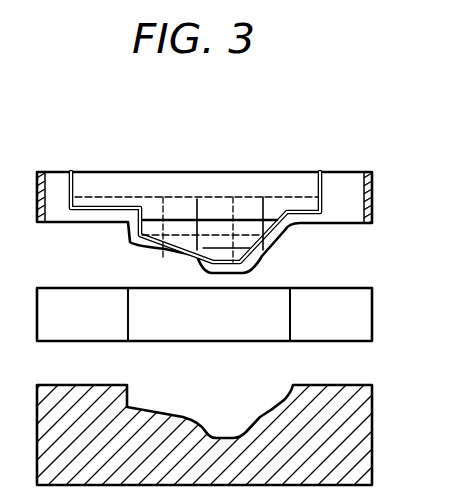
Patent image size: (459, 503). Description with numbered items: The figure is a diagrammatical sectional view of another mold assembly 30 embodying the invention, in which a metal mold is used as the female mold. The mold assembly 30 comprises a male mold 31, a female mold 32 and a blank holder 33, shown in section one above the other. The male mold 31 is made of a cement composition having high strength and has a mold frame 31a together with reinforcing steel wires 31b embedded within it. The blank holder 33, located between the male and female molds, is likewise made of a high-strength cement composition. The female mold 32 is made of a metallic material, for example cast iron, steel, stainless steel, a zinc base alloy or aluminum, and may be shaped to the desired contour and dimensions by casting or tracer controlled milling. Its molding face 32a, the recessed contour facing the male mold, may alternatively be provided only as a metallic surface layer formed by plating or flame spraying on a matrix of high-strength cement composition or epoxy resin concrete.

The mold assembly 30 is at (105, 123).
The male mold 31 is at (178, 182).
The mold frame 31a is at (373, 198).
The reinforcing steel wires 31b is at (265, 210).
The female mold 32 is at (348, 425).
The molding face 32a is at (167, 414).
The blank holder 33 is at (357, 323).